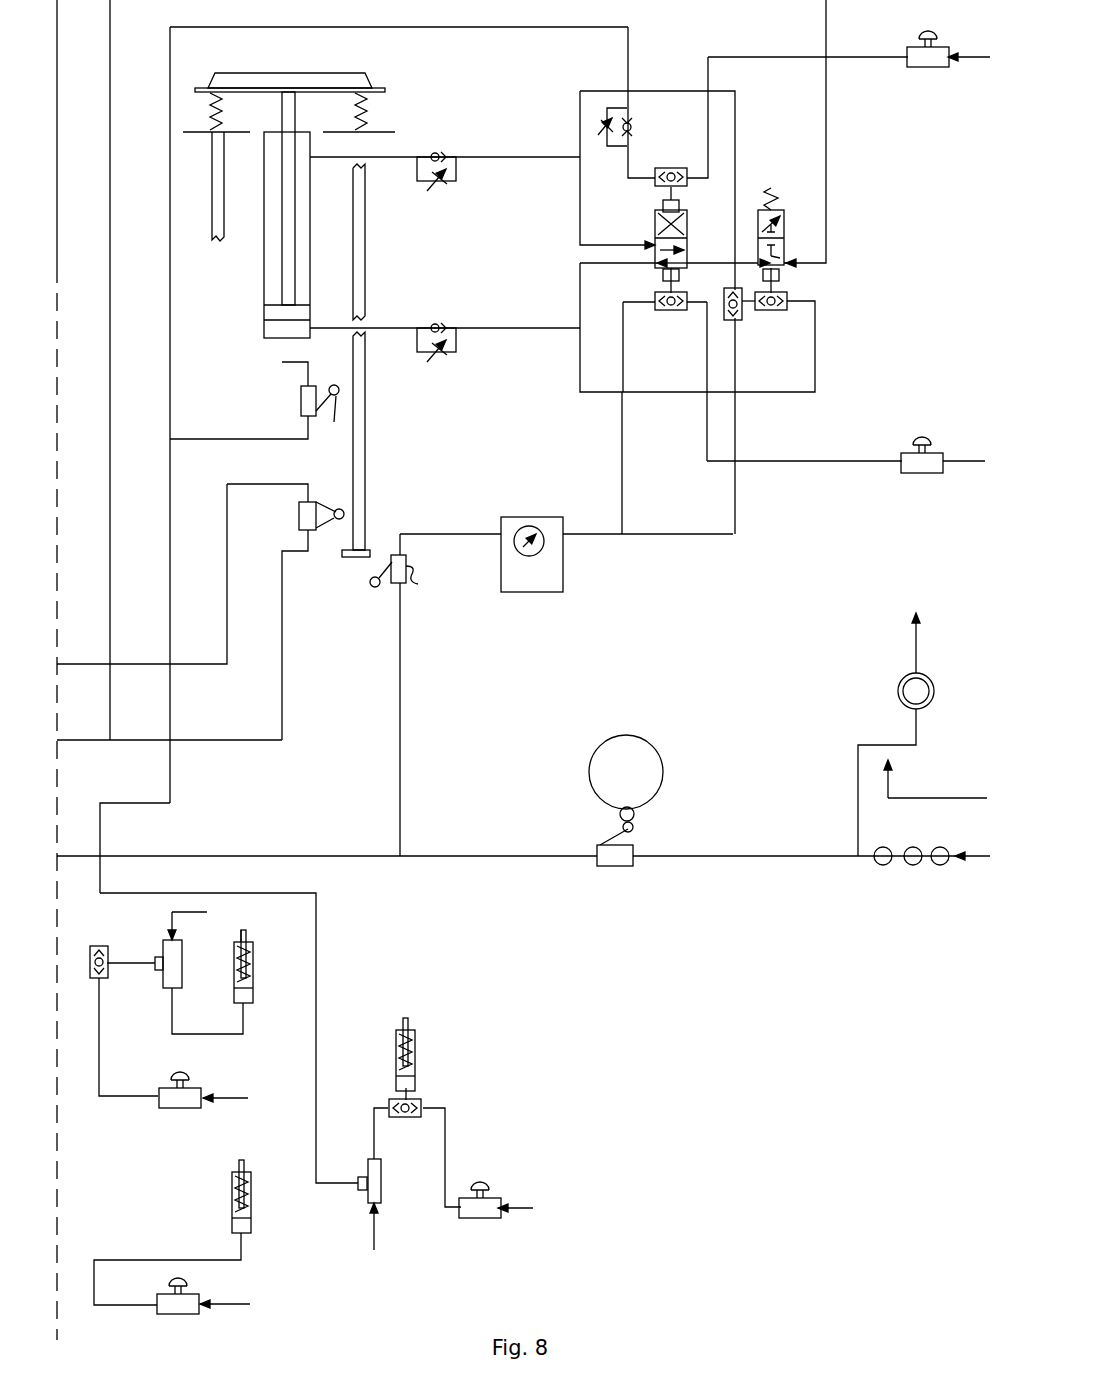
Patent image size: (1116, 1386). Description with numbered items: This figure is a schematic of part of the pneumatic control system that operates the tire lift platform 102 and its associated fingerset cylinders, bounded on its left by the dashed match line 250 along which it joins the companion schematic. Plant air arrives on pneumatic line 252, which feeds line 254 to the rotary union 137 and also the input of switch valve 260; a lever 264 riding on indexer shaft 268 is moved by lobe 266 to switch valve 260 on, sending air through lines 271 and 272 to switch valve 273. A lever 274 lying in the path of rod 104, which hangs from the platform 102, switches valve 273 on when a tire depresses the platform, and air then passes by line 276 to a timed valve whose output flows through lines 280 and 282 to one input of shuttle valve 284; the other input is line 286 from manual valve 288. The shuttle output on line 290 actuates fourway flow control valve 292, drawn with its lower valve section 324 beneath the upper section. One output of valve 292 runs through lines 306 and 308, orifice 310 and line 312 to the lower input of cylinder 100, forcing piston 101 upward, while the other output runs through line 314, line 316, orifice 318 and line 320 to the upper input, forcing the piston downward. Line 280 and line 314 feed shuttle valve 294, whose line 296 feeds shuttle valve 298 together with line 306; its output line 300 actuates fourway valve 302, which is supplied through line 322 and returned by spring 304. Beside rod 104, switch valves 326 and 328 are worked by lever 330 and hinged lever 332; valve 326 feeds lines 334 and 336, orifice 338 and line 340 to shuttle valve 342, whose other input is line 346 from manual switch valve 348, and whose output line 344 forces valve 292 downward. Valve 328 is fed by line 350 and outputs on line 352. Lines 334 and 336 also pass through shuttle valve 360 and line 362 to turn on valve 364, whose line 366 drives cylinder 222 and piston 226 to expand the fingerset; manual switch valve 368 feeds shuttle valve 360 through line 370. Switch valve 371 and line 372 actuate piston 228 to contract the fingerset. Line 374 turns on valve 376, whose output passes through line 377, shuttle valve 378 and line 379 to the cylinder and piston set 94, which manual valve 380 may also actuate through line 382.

The cylinder and piston set 94 is at (418, 1028).
The cylinder and piston 100 is at (263, 247).
The piston 101 is at (276, 118).
The lift platform 102 is at (376, 80).
The rod 104 is at (226, 166).
The rotary union 137 is at (934, 690).
The cylinder 222 is at (254, 978).
The piston 226 is at (248, 934).
The piston 228 is at (232, 1164).
The match line 250 is at (57, 72).
The pneumatic line 252 is at (976, 62).
The pneumatic line 254 is at (858, 822).
The switch valve 260 is at (615, 866).
The lever 264 is at (606, 840).
The lobe 266 is at (637, 818).
The indexer shaft 268 is at (664, 773).
The pneumatic line 271 is at (420, 856).
The pneumatic line 272 is at (400, 702).
The switch valve 273 is at (429, 573).
The lever 274 is at (369, 582).
The pneumatic line 276 is at (515, 517).
The pneumatic line 280 is at (585, 535).
The pneumatic line 282 is at (623, 465).
The shuttle valve 284 is at (640, 314).
The pneumatic line 286 is at (707, 356).
The manual valve 288 is at (915, 476).
The pneumatic line 290 is at (686, 294).
The fourway flow control valve 292 is at (655, 232).
The shuttle valve 294 is at (735, 322).
The pneumatic line 296 is at (743, 310).
The shuttle valve 298 is at (790, 296).
The pneumatic line 300 is at (787, 284).
The fourway flow control valve 302 is at (784, 220).
The spring 304 is at (766, 200).
The pneumatic line 306 is at (581, 310).
The pneumatic line 308 is at (495, 327).
The orifice 310 is at (450, 356).
The pneumatic line 312 is at (396, 327).
The pneumatic line 314 is at (735, 153).
The pneumatic line 316 is at (478, 157).
The orifice 318 is at (444, 183).
The pneumatic line 320 is at (408, 156).
The pneumatic line 322 is at (826, 125).
The valve 324 is at (688, 263).
The switch valve 326 is at (300, 404).
The switch valve 328 is at (296, 526).
The lever 330 is at (332, 417).
The hinged lever 332 is at (337, 508).
The pneumatic line 334 is at (180, 439).
The pneumatic line 336 is at (170, 380).
The orifice 338 is at (636, 114).
The pneumatic line 340 is at (630, 165).
The shuttle valve 342 is at (656, 186).
The pneumatic line 344 is at (680, 192).
The pneumatic line 346 is at (722, 57).
The manual switch valve 348 is at (942, 45).
The pneumatic line 350 is at (283, 648).
The pneumatic line 352 is at (227, 620).
The shuttle valve 360 is at (104, 946).
The pneumatic line 362 is at (121, 965).
The valve 364 is at (183, 976).
The pneumatic line 366 is at (172, 1014).
The manual switch valve 368 is at (201, 1090).
The pneumatic line 370 is at (100, 1077).
The switch valve 371 is at (200, 1300).
The pneumatic line 372 is at (100, 1262).
The pneumatic line 374 is at (316, 962).
The valve 376 is at (382, 1184).
The pneumatic line 377 is at (374, 1148).
The shuttle valve 378 is at (425, 1100).
The pneumatic line 379 is at (400, 1096).
The manual valve 380 is at (500, 1198).
The pneumatic line 382 is at (448, 1152).